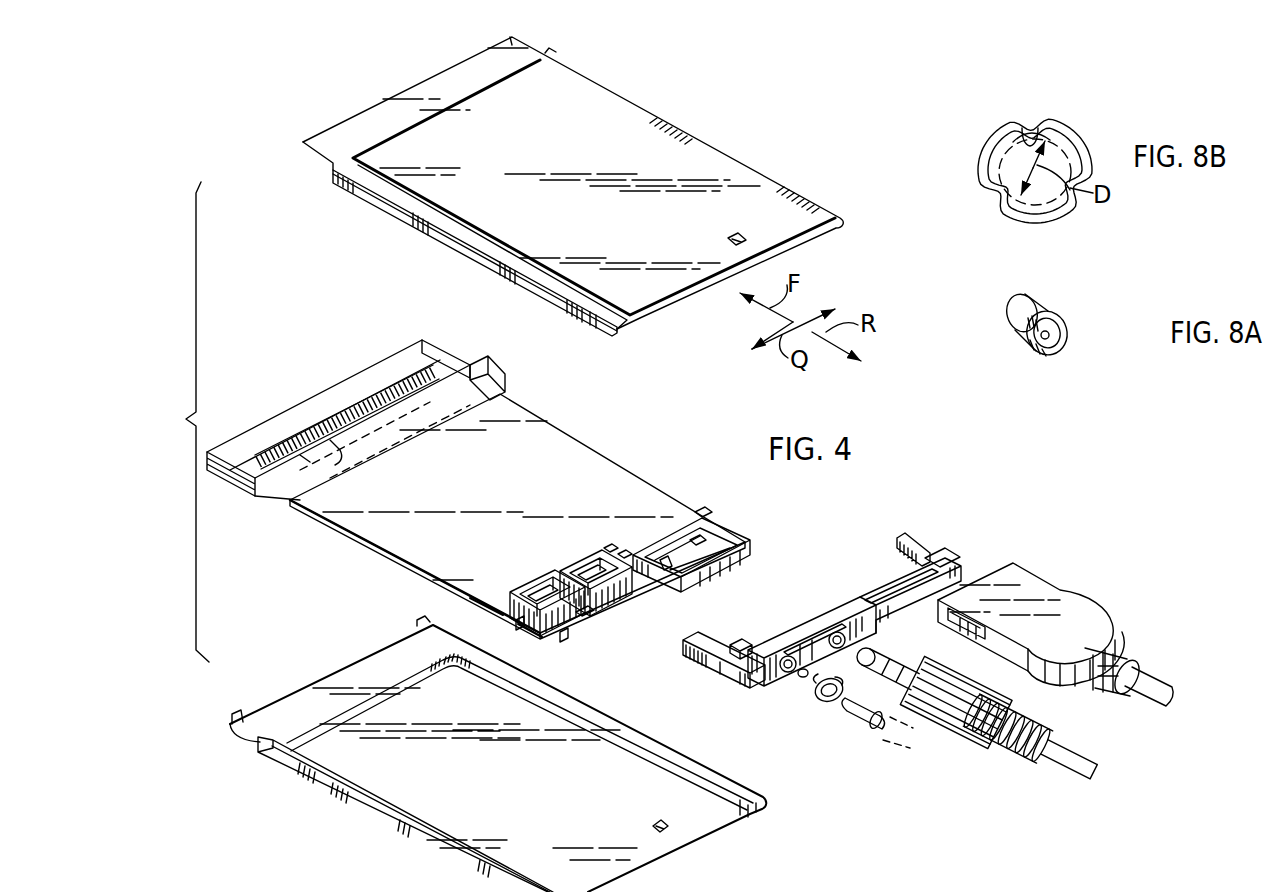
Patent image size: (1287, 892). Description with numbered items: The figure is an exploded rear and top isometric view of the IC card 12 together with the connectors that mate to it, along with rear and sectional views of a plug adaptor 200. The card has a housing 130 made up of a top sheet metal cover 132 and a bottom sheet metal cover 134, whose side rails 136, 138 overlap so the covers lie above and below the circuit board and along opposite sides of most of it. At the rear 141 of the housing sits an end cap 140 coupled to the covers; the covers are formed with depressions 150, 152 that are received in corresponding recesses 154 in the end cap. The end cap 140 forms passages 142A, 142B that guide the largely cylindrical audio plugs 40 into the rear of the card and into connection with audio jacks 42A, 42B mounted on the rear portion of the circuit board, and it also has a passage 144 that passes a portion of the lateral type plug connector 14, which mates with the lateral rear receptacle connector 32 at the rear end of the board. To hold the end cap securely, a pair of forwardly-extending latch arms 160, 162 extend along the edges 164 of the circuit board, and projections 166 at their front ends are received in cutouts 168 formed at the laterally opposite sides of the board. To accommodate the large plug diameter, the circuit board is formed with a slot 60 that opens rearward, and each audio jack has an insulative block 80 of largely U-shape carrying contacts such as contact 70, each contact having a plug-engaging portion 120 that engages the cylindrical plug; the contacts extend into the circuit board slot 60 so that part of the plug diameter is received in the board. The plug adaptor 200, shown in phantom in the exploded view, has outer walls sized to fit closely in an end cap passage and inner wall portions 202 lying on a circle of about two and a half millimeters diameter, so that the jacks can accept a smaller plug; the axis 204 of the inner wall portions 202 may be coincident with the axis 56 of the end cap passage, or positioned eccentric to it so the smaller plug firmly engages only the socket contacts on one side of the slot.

In FIG. 4, the IC card 12 is at (702, 106).
In FIG. 4, the lateral type plug connector 14 is at (1053, 583).
In FIG. 4, the lateral rear receptacle connector 32 is at (680, 534).
In FIG. 4, the audio plug 40 is at (867, 713).
In FIG. 4, the audio jack 42A is at (575, 567).
In FIG. 4, the audio jack 42B is at (523, 582).
In FIG. 4, the end cap passage axis 56 is at (802, 675).
In FIG. 4, the circuit board slot 60 is at (630, 597).
In FIG. 4, the contact 70 is at (610, 550).
In FIG. 4, the insulative block 80 is at (623, 553).
In FIG. 4, the plug-engaging portion 120 is at (585, 622).
In FIG. 4, the housing 130 is at (819, 186).
In FIG. 4, the top cover 132 is at (590, 77).
In FIG. 4, the bottom cover 134 is at (410, 834).
In FIG. 4, the side rail 136 is at (427, 233).
In FIG. 4, the side rail 138 is at (353, 798).
In FIG. 4, the end cap 140 is at (957, 547).
In FIG. 4, the rear of the housing 141 is at (757, 545).
In FIG. 4, the passage 142A is at (823, 603).
In FIG. 4, the passage 142B is at (800, 636).
In FIG. 4, the passage 144 is at (927, 557).
In FIG. 4, the depression 150 is at (733, 236).
In FIG. 4, the depression 152 is at (667, 820).
In FIG. 4, the recess 154 is at (857, 587).
In FIG. 4, the latch arm 160 is at (708, 667).
In FIG. 4, the latch arm 162 is at (923, 549).
In FIG. 4, the circuit board edge 164 is at (530, 634).
In FIG. 4, the projection 166 is at (697, 640).
In FIG. 4, the cutout 168 is at (497, 615).
In FIG. 4, the plug adaptor 200 is at (812, 689).
In FIG. 8B, the plug adaptor 200 is at (997, 203).
In FIG. 8A, the plug adaptor 200 is at (1003, 382).
In FIG. 8B, the inner wall portions 202 is at (1028, 126).
In FIG. 8A, the inner wall portions 202 is at (1052, 338).
In FIG. 8B, the axis of the inner wall portions 204 is at (1040, 167).